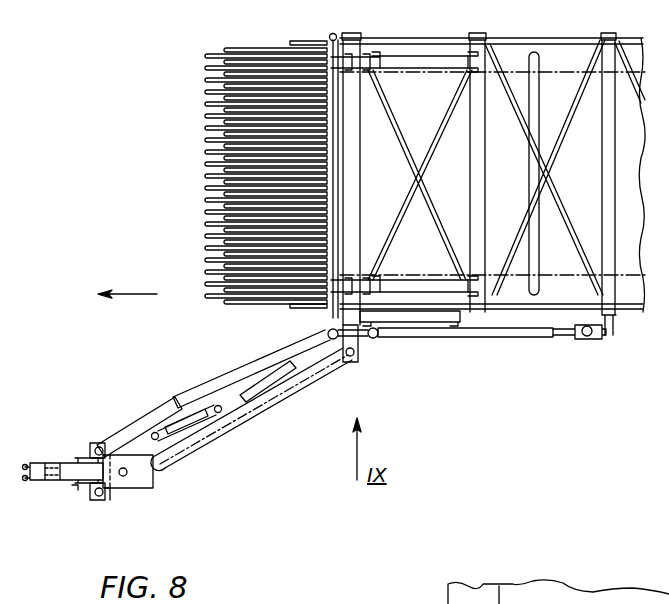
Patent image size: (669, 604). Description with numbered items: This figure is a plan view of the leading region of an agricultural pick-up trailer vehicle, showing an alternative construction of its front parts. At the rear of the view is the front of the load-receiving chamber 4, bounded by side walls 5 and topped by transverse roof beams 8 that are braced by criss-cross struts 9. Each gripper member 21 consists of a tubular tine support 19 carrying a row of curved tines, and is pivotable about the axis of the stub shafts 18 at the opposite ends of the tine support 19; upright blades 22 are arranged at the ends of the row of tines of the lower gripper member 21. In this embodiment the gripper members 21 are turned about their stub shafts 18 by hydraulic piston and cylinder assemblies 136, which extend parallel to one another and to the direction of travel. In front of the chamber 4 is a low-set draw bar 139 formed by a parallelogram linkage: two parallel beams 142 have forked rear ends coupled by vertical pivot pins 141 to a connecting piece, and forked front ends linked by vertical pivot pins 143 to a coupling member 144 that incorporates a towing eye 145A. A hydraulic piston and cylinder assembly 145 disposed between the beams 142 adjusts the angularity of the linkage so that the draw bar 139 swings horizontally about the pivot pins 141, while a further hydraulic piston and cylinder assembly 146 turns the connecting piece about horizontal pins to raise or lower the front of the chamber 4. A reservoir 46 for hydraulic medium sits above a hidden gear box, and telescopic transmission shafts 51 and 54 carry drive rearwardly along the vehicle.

The load-receiving chamber 4 is at (479, 167).
The side walls 5 is at (558, 38).
The transverse roof beams 8 is at (603, 163).
The struts 9 is at (553, 223).
The stub shafts 18 is at (332, 32).
The tine supports 19 is at (327, 33).
The gripper member 21 is at (203, 113).
The upright blades 22 is at (308, 34).
The hydraulic piston and cylinder assemblies 136 is at (407, 68).
The draw bar 139 is at (160, 410).
The pivot pins 141 is at (350, 360).
The parallel beams 142 is at (250, 362).
The pivot pins 143 is at (93, 445).
The coupling member 144 is at (110, 490).
The hydraulic piston and cylinder assembly 145 is at (190, 413).
The towing eye 145A is at (72, 465).
The hydraulic piston and cylinder assembly 146 is at (438, 320).
The reservoir 46 is at (155, 478).
The telescopic transmission shaft 51 is at (177, 467).
The telescopic transmission shaft 54 is at (523, 334).